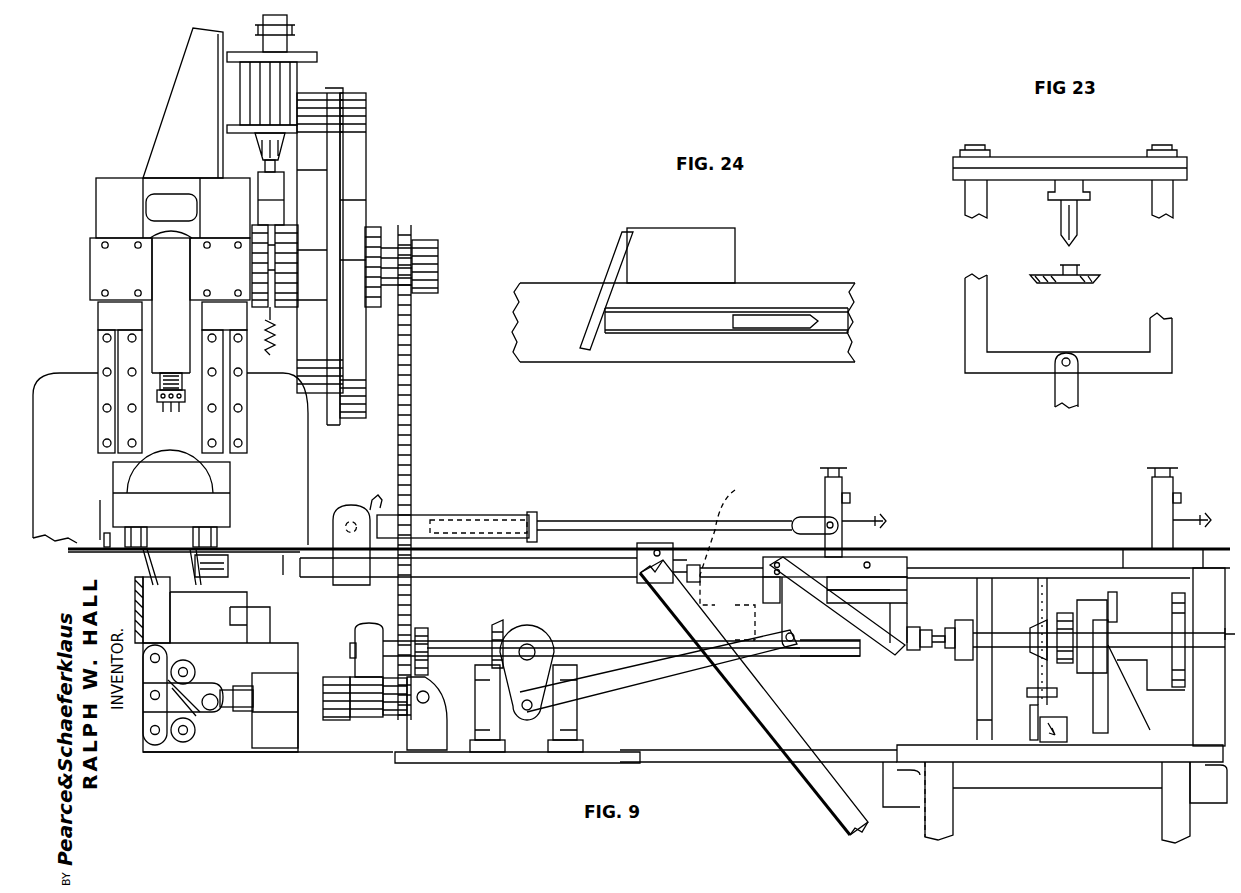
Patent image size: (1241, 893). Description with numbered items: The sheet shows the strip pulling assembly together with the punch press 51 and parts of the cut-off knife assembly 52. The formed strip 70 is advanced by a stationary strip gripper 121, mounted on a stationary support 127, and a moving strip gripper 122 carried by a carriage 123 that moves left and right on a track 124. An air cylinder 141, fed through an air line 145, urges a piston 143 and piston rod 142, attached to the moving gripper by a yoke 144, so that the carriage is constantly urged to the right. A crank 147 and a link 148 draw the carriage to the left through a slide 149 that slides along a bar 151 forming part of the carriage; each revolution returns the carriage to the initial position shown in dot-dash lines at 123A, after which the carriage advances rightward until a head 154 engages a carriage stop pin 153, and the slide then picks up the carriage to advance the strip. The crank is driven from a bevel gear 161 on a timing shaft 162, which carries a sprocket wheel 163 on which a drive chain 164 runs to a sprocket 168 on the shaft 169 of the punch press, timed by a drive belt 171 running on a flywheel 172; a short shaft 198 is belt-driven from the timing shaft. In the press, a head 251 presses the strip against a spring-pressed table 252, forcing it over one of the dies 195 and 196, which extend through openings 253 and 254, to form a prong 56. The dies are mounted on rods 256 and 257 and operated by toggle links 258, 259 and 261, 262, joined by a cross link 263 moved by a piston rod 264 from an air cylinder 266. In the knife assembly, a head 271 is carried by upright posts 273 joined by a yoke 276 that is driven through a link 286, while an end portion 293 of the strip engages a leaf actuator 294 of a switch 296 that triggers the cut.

In FIG. 9, the punch press 51 is at (125, 176).
In FIG. 9, the drive belt 171 is at (330, 92).
In FIG. 9, the flywheel 172 is at (356, 147).
In FIG. 9, the sprocket 168 is at (413, 245).
In FIG. 9, the shaft 169 is at (425, 250).
In FIG. 9, the drive chain 164 is at (413, 382).
In FIG. 9, the head 251 is at (222, 503).
In FIG. 9, the opening 254 is at (172, 572).
In FIG. 9, the opening 253 is at (150, 552).
In FIG. 9, the prong 56 is at (106, 535).
In FIG. 9, the die 195 is at (150, 560).
In FIG. 9, the die 196 is at (190, 555).
In FIG. 9, the table 252 is at (218, 558).
In FIG. 9, the rod 256 is at (160, 612).
In FIG. 9, the rod 257 is at (183, 632).
In FIG. 9, the toggle link 261 is at (197, 668).
In FIG. 9, the toggle link 259 is at (165, 700).
In FIG. 9, the toggle link 262 is at (195, 712).
In FIG. 9, the cross link 263 is at (212, 708).
In FIG. 9, the toggle link 258 is at (150, 670).
In FIG. 9, the piston rod 264 is at (255, 710).
In FIG. 9, the air cylinder 266 is at (383, 722).
In FIG. 9, the air cylinder 141 is at (490, 515).
In FIG. 9, the piston 143 is at (448, 518).
In FIG. 9, the piston rod 142 is at (650, 524).
In FIG. 9, the yoke 144 is at (810, 518).
In FIG. 9, the air line 145 is at (383, 495).
In FIG. 9, the track 124 is at (570, 576).
In FIG. 9, the initial position of carriage 123A is at (735, 490).
In FIG. 9, the carriage 123 is at (880, 565).
In FIG. 9, the moving strip gripper 122 is at (840, 485).
In FIG. 9, the formed strip 70 is at (985, 548).
In FIG. 23, the formed strip 70 is at (1080, 270).
In FIG. 9, the stationary strip gripper 121 is at (1168, 478).
In FIG. 9, the stationary support 127 is at (1240, 535).
In FIG. 9, the short shaft 198 is at (1133, 633).
In FIG. 9, the timing shaft 162 is at (455, 660).
In FIG. 9, the sprocket wheel 163 is at (418, 620).
In FIG. 9, the bevel gear 161 is at (498, 620).
In FIG. 9, the crank 147 is at (545, 642).
In FIG. 9, the link 148 is at (625, 690).
In FIG. 9, the slide 149 is at (815, 618).
In FIG. 9, the bar 151 is at (890, 618).
In FIG. 9, the head 154 is at (925, 655).
In FIG. 9, the carriage stop pin 153 is at (950, 655).
In FIG. 24, the end portion 293 is at (628, 328).
In FIG. 24, the switch 296 is at (665, 238).
In FIG. 24, the leaf actuator 294 is at (601, 316).
In FIG. 23, the cut-off knife assembly 52 is at (1197, 139).
In FIG. 23, the head 271 is at (1003, 167).
In FIG. 23, the upright posts 273 is at (968, 205).
In FIG. 23, the yoke 276 is at (998, 362).
In FIG. 23, the link 286 is at (1076, 390).